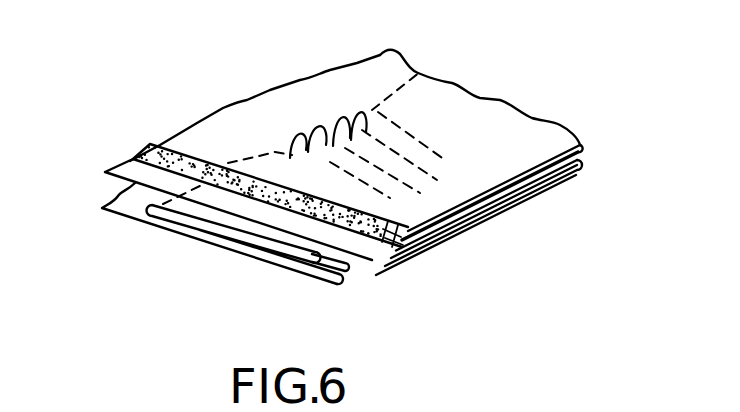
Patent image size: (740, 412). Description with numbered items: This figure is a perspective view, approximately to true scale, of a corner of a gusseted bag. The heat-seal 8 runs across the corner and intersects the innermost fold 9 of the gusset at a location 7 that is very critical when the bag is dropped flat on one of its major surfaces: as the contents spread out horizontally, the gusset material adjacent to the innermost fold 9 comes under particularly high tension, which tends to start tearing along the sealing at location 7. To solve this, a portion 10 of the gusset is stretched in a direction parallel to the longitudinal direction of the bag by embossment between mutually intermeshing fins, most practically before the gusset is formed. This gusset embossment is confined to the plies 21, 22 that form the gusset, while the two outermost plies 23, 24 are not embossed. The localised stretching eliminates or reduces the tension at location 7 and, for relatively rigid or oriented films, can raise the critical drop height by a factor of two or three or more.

The location 7 is at (243, 171).
The heat-seal 8 is at (155, 158).
The innermost fold 9 is at (413, 72).
The portion 10 is at (341, 112).
The ply 21 is at (350, 275).
The ply 22 is at (334, 285).
The outermost ply 23 is at (115, 168).
The outermost ply 24 is at (148, 222).